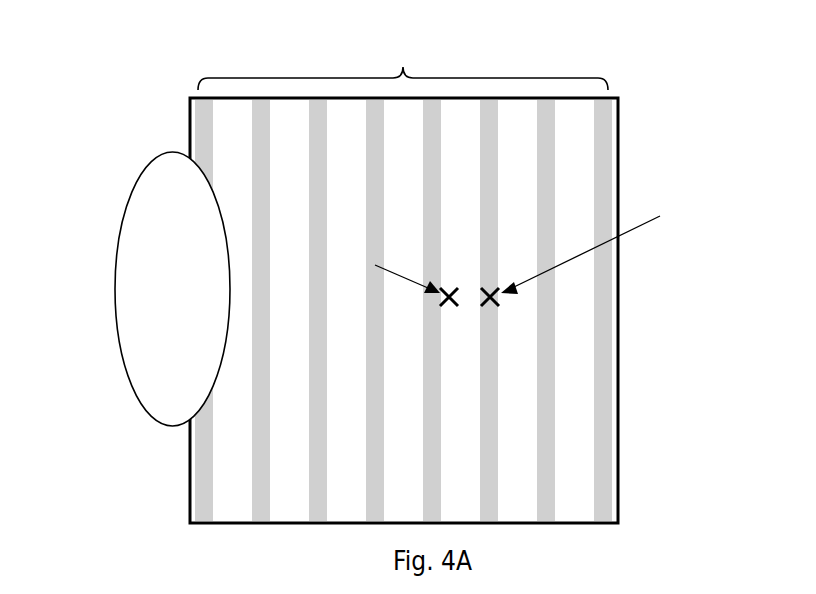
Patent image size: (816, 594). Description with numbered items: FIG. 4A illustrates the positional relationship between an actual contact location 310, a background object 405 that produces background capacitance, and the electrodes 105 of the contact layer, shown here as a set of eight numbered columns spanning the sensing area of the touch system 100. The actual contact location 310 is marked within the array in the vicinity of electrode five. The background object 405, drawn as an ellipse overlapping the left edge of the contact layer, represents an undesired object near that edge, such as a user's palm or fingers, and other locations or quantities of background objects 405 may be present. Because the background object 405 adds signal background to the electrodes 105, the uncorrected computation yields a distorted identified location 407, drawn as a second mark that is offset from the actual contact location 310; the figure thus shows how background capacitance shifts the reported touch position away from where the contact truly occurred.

The touch sensor system 100 is at (132, 119).
The electrodes 105 is at (403, 66).
The background object 405 is at (127, 240).
The identified location 407 is at (337, 203).
The actual contact location 310 is at (708, 190).